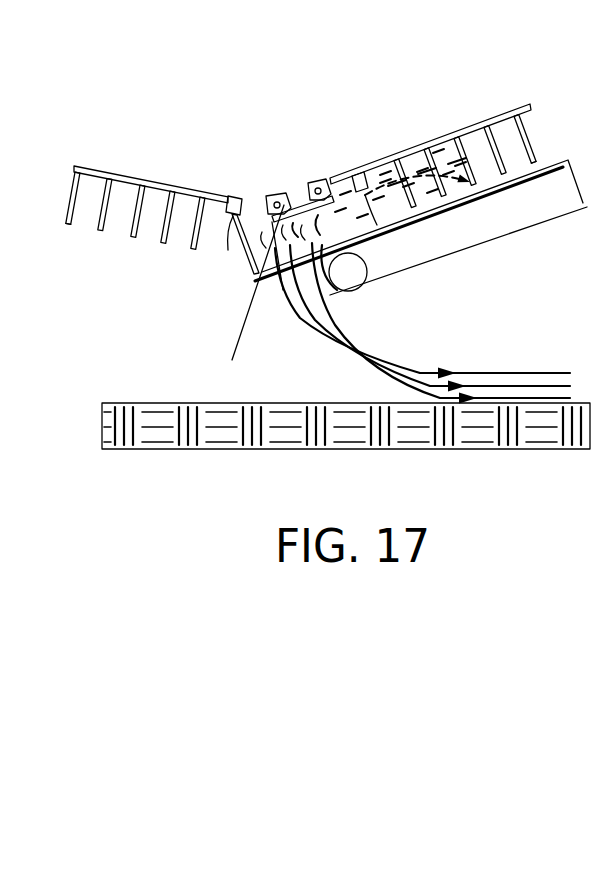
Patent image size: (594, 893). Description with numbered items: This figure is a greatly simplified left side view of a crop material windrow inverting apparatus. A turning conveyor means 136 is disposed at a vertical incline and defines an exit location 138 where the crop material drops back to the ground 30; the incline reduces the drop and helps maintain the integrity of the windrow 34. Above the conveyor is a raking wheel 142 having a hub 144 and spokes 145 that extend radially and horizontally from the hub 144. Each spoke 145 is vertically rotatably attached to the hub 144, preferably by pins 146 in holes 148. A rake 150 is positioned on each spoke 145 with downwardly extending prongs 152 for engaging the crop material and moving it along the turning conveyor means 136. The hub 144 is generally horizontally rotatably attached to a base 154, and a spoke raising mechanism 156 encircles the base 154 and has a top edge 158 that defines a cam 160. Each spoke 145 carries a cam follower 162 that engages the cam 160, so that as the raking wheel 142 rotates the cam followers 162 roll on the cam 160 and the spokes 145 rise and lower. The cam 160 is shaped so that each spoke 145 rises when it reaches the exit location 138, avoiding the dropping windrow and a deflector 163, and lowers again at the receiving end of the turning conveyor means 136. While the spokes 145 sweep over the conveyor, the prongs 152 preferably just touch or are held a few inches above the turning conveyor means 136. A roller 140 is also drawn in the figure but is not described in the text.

The ground 30 is at (153, 402).
The windrow 34 is at (544, 378).
The turning conveyor means 136 is at (487, 222).
The exit location 138 is at (336, 298).
The roller 140 is at (337, 290).
The raking wheel 142 is at (483, 122).
The hub 144 is at (294, 208).
The spokes 145 is at (408, 155).
The pins 146 is at (324, 180).
The holes 148 is at (279, 192).
The rake 150 is at (512, 166).
The prongs 152 is at (538, 158).
The base 154 is at (312, 292).
The spoke raising mechanism 156 is at (241, 270).
The top edge 158 is at (400, 215).
The cam 160 is at (377, 225).
The cam follower 162 is at (359, 175).
The deflector 163 is at (237, 338).